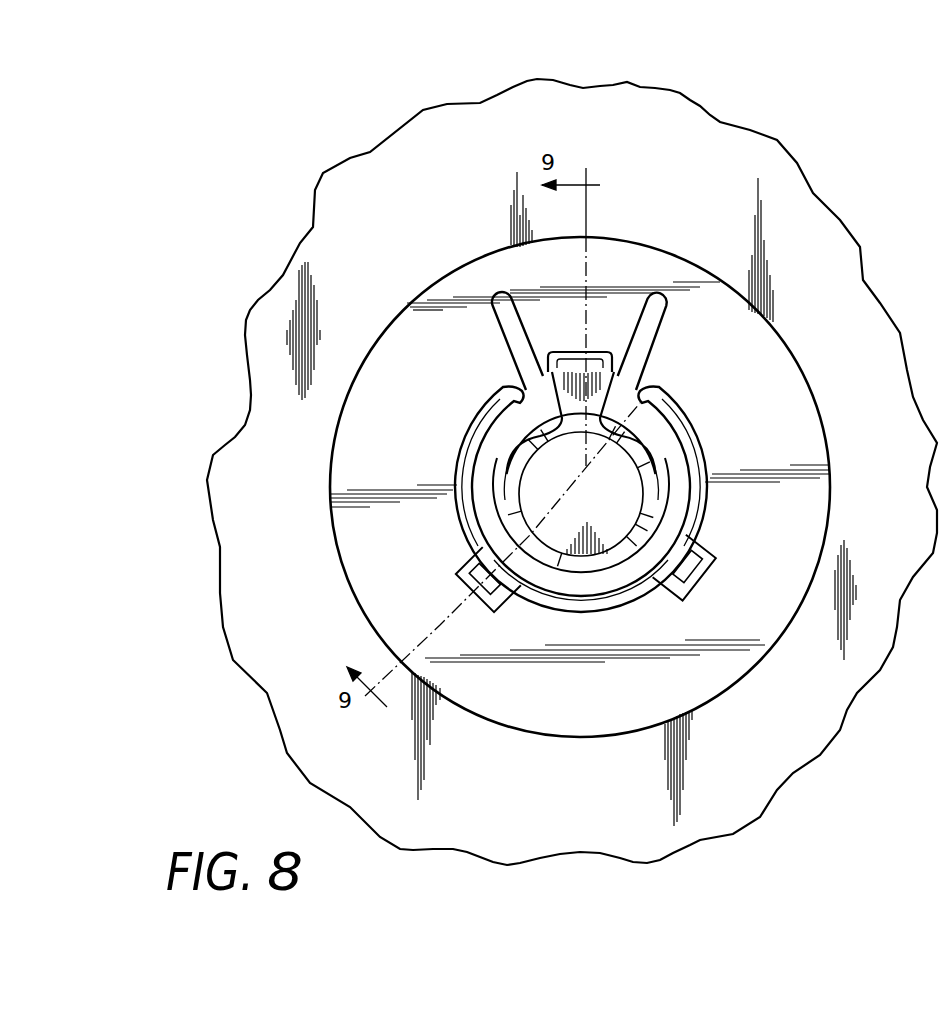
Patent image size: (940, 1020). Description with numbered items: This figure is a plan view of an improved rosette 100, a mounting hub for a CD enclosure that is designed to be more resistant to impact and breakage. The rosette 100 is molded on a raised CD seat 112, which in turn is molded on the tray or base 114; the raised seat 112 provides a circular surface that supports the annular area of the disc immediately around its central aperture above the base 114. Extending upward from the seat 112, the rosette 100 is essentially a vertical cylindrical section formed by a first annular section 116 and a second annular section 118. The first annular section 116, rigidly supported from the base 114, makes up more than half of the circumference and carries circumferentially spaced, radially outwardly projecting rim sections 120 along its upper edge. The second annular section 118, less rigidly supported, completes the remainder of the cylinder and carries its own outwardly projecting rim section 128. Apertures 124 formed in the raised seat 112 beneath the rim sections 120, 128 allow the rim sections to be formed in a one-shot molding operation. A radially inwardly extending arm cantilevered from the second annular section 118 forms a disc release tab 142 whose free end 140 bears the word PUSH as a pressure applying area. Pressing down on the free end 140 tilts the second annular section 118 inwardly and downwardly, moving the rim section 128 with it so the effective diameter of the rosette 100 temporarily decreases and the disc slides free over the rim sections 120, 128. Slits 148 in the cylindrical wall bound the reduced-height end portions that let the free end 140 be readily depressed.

The rosette 100 is at (706, 490).
The raised CD seat 112 is at (780, 396).
The tray or base 114 is at (800, 719).
The first annular section 116 is at (538, 613).
The second annular section 118 is at (622, 352).
The rim sections 120 is at (477, 567).
The apertures 124 is at (513, 275).
The rim section 128 is at (587, 355).
The free end 140 is at (615, 538).
The disc release tab 142 is at (528, 388).
The slits 148 is at (503, 320).